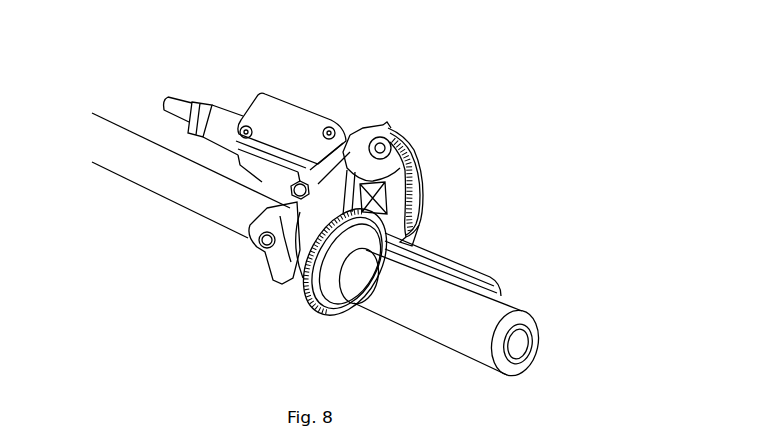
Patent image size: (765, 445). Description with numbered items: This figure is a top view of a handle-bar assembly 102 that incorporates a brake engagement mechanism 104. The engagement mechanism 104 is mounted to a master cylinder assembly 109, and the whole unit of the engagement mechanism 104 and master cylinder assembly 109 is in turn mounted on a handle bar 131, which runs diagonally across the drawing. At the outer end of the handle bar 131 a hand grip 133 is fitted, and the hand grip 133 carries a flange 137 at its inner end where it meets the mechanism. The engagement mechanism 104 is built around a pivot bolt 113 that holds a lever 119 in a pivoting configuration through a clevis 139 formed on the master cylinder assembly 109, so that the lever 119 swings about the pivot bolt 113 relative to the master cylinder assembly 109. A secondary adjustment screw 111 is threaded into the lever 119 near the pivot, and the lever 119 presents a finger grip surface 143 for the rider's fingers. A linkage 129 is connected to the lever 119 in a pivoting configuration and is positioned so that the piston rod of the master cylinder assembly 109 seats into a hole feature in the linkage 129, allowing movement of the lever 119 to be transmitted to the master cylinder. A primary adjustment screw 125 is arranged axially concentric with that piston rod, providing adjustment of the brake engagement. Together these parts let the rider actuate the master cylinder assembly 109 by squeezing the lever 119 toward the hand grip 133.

The handle-bar assembly 102 is at (512, 107).
The engagement mechanism 104 is at (418, 167).
The master cylinder assembly 109 is at (308, 104).
The secondary adjustment screw 111 is at (385, 126).
The pivot bolt 113 is at (405, 137).
The lever 119 is at (444, 273).
The primary adjustment screw 125 is at (424, 218).
The linkage 129 is at (338, 200).
The handle bar 131 is at (148, 192).
The hand grip 133 is at (520, 308).
The flange 137 is at (331, 322).
The clevis 139 is at (404, 168).
The finger grip surface 143 is at (481, 270).